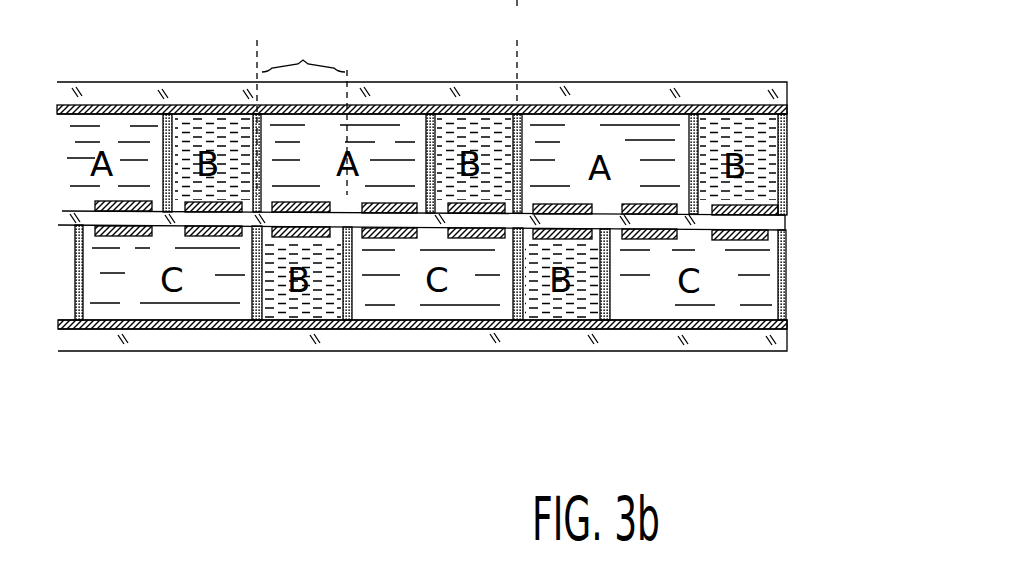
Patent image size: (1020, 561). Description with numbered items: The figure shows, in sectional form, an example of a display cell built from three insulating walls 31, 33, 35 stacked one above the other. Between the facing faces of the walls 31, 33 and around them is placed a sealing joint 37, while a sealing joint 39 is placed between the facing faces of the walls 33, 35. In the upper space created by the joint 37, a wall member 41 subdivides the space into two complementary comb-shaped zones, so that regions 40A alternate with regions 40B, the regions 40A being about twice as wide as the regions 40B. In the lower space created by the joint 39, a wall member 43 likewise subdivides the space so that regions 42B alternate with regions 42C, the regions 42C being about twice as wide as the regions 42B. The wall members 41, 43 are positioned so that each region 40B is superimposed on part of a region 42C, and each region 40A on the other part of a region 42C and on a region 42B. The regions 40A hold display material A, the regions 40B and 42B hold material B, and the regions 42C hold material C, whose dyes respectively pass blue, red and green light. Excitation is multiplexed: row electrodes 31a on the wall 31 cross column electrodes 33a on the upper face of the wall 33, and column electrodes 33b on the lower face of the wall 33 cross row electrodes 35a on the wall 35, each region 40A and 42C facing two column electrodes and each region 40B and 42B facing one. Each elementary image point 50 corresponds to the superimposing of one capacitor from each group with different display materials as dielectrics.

The insulating wall 31 is at (556, 94).
The row electrodes 31a is at (625, 112).
The insulating wall 33 is at (758, 222).
The column electrodes 33a is at (786, 204).
The column electrodes 33b is at (754, 242).
The insulating wall 35 is at (590, 342).
The row electrodes 35a is at (705, 328).
The sealing joint 37 is at (791, 132).
The sealing joint 39 is at (790, 316).
The regions 40A is at (121, 124).
The regions 40B is at (218, 124).
The wall member 41 is at (516, 132).
The regions 42B is at (277, 303).
The regions 42C is at (110, 302).
The wall member 43 is at (517, 282).
The elementary image point 50 is at (387, 97).